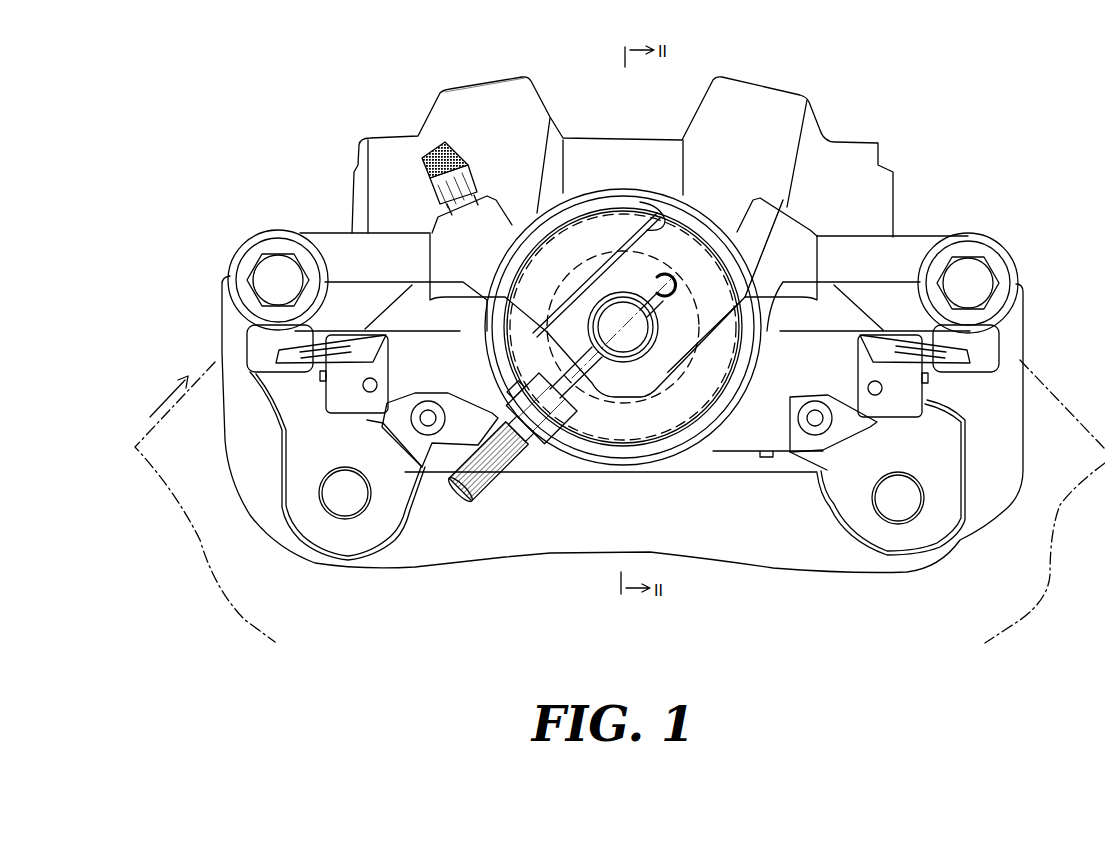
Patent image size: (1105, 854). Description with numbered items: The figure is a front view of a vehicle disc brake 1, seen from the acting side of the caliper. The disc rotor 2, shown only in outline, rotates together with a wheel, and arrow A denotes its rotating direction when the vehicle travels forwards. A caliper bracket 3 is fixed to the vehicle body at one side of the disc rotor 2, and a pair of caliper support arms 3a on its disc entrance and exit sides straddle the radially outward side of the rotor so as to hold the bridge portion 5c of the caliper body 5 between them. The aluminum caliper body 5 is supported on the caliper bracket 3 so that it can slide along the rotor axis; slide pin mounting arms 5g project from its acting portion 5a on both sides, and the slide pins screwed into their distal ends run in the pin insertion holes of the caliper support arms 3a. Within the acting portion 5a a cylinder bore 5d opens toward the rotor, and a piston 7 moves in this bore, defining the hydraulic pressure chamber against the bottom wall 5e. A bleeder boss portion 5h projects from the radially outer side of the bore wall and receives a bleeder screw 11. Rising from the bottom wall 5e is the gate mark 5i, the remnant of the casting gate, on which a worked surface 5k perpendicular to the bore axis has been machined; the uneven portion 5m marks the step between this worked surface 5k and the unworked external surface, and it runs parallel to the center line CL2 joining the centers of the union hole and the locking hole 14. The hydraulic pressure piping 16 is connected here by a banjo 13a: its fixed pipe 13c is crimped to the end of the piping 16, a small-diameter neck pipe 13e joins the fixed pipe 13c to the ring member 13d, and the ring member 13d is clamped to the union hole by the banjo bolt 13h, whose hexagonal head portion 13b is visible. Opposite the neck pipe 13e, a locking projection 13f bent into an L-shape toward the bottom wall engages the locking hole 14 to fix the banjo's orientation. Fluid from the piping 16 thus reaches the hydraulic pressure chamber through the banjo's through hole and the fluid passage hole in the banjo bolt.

The vehicle disc brake 1 is at (636, 21).
The disc rotor 2 is at (1062, 397).
The caliper bracket 3 is at (414, 580).
The caliper support arm 3a is at (230, 326).
The caliper body 5 is at (770, 72).
The acting portion 5a is at (660, 472).
The bridge portion 5c is at (487, 92).
The cylinder bore 5d is at (695, 456).
The bottom wall 5e is at (621, 462).
The slide pin mounting arm 5g is at (333, 240).
The bleeder boss portion 5h is at (500, 212).
The gate mark 5i is at (600, 228).
The worked surface 5k is at (700, 225).
The uneven portion 5m is at (652, 215).
The piston 7 is at (574, 462).
The bleeder screw 11 is at (438, 203).
The banjo 13a is at (600, 379).
The banjo bolt 13b is at (663, 330).
The fixed pipe 13c is at (538, 380).
The ring member 13d is at (645, 378).
The neck pipe 13e is at (578, 358).
The locking projection 13f is at (680, 288).
The banjo bolt 13h is at (590, 297).
The locking hole 14 is at (640, 290).
The hydraulic pressure piping 16 is at (498, 474).
The center line CL2 is at (455, 500).
The rotating direction of disc rotor A is at (170, 385).